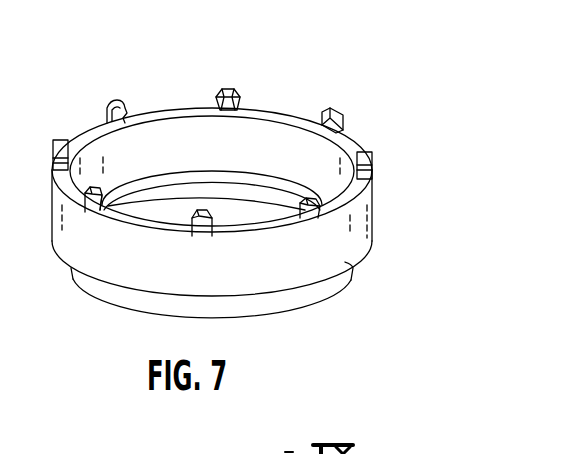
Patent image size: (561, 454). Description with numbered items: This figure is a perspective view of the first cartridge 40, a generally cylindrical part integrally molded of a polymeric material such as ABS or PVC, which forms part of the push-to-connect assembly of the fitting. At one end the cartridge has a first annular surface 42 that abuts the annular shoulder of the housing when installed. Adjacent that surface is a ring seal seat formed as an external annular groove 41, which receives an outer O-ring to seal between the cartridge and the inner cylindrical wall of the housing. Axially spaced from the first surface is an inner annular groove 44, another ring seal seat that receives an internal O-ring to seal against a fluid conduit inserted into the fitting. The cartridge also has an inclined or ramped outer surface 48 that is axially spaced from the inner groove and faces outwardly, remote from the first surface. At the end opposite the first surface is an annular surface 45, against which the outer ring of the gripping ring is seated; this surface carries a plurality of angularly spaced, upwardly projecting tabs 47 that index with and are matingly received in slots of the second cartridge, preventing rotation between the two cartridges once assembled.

The first cartridge 40 is at (265, 196).
The external annular groove 41 is at (307, 292).
The first annular surface 42 is at (230, 318).
The inner annular groove 44 is at (203, 188).
The annular surface 45 is at (92, 127).
The tabs 47 is at (228, 88).
The ramped outer surface 48 is at (152, 143).